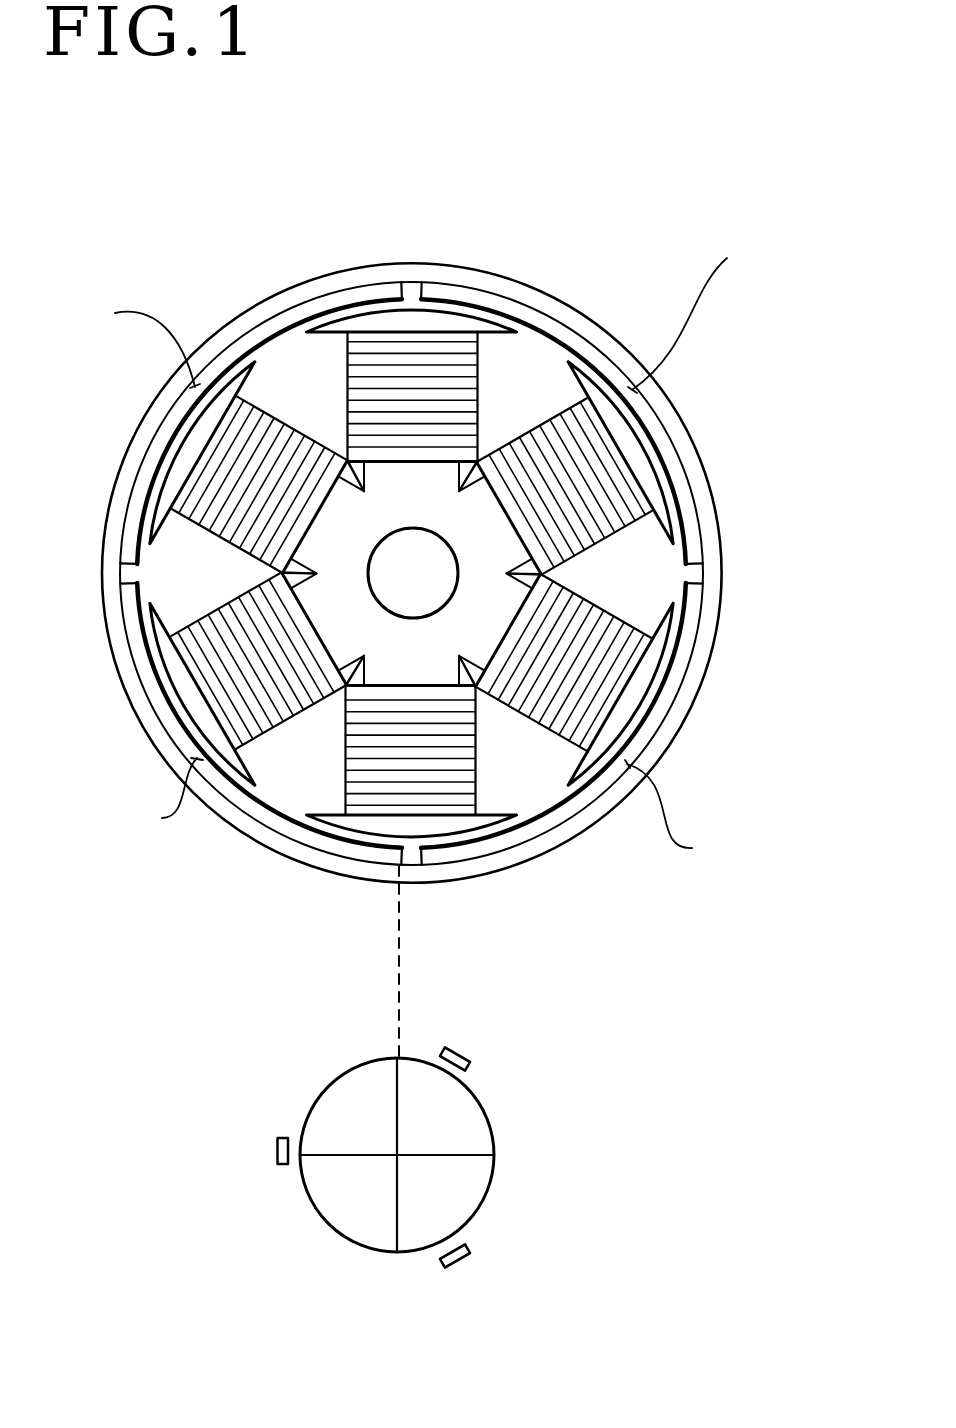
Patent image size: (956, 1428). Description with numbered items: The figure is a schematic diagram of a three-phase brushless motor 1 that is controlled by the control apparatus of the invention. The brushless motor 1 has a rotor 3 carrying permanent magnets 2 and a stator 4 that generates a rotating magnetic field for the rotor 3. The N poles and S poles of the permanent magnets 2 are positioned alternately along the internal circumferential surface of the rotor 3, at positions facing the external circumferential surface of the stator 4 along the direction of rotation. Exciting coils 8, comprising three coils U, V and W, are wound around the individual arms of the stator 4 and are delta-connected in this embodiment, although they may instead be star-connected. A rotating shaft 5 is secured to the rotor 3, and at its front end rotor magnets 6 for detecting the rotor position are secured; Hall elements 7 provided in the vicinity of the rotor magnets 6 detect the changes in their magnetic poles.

The brushless motor 1 is at (592, 291).
The permanent magnets 2 is at (675, 472).
The rotor 3 is at (476, 277).
The stator 4 is at (632, 453).
The rotating shaft 5 is at (437, 587).
The rotor magnets 6 is at (473, 1126).
The Hall elements 7 is at (463, 1053).
The exciting coils 8 is at (350, 382).